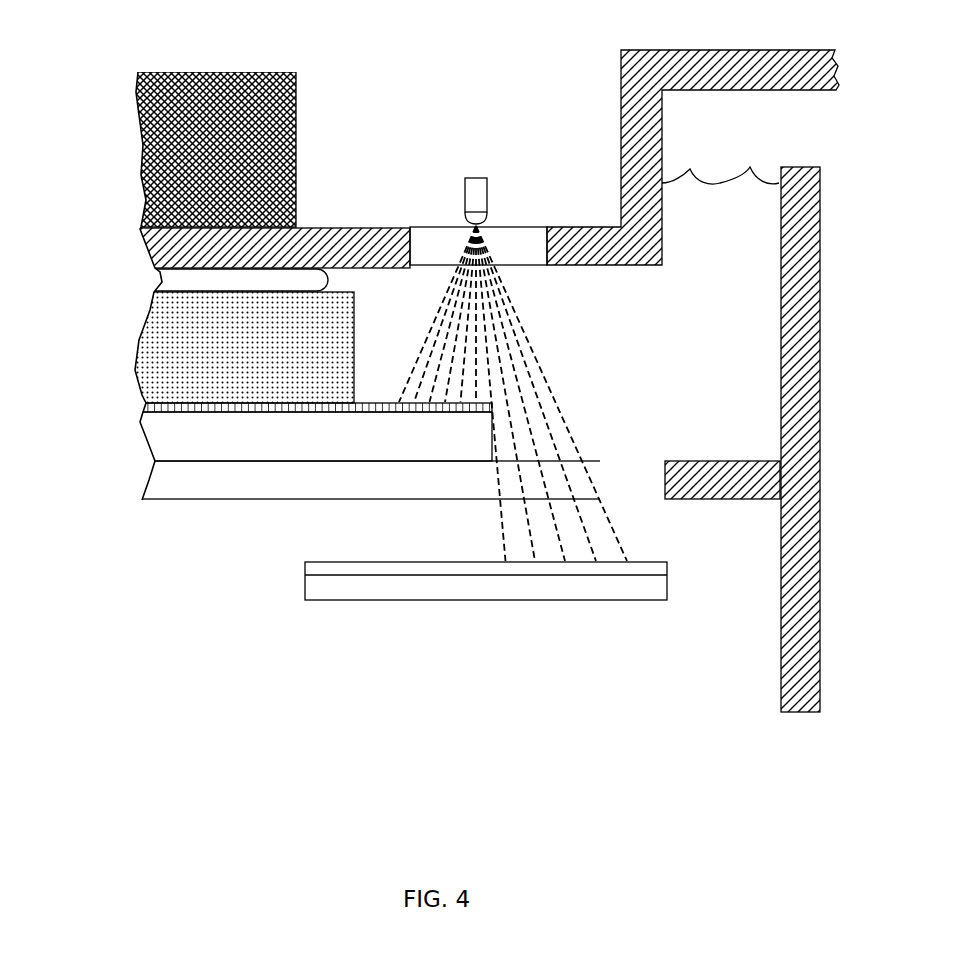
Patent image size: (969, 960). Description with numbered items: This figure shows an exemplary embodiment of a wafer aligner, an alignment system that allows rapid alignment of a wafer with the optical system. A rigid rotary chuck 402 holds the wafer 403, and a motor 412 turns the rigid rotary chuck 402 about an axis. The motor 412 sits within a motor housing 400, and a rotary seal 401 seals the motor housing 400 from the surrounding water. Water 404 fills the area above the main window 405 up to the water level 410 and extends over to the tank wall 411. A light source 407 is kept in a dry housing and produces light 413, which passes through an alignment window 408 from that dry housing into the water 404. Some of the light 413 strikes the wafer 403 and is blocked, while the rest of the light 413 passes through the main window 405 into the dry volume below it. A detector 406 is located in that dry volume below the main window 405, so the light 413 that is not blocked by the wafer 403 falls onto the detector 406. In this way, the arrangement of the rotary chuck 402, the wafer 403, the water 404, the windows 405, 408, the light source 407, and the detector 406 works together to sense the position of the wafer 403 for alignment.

The motor housing 400 is at (138, 247).
The rotary seal 401 is at (173, 280).
The rotary chuck 402 is at (167, 367).
The wafer 403 is at (150, 410).
The water 404 is at (170, 445).
The window 405 is at (175, 492).
The detector 406 is at (305, 577).
The light source 407 is at (463, 178).
The alignment window 408 is at (430, 225).
The water level 410 is at (690, 169).
The tank wall 411 is at (819, 248).
The motor 412 is at (133, 123).
The light 413 is at (540, 357).